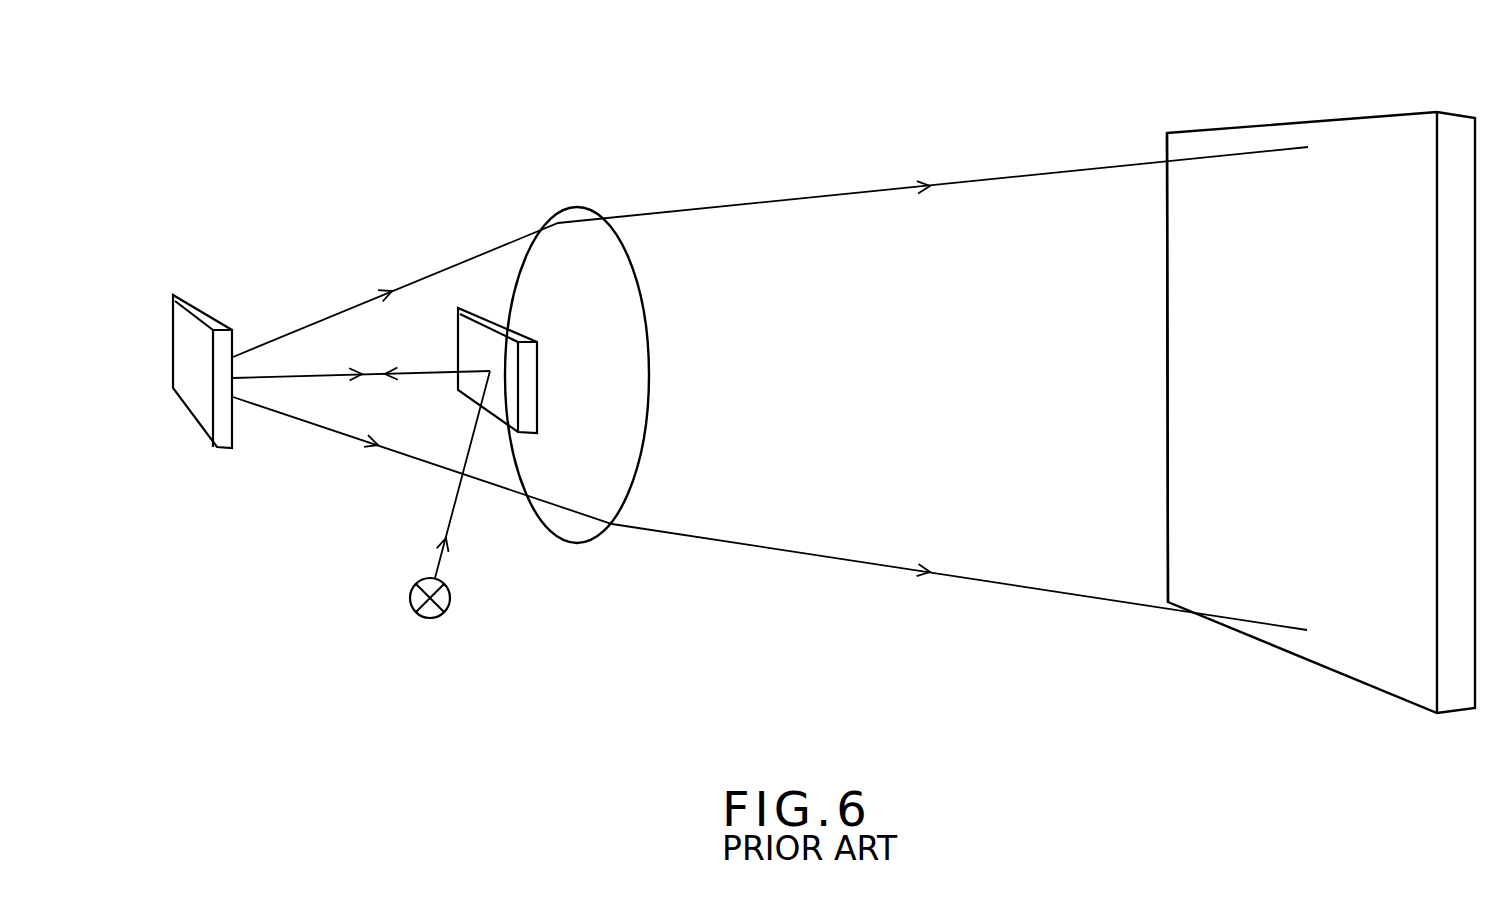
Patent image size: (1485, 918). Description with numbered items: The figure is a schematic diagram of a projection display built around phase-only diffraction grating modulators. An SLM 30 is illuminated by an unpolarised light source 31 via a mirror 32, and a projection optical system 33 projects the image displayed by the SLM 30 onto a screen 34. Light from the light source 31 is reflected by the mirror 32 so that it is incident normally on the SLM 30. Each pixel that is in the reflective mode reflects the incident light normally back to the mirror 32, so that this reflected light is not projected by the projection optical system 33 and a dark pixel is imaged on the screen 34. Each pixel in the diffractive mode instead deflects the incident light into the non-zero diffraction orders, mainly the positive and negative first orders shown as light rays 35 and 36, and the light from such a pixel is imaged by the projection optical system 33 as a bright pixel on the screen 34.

The SLM 30 is at (182, 296).
The light source 31 is at (448, 608).
The mirror 32 is at (475, 307).
The projection optical system 33 is at (571, 205).
The screen 34 is at (1318, 647).
The light ray 35 is at (330, 317).
The light ray 36 is at (323, 430).